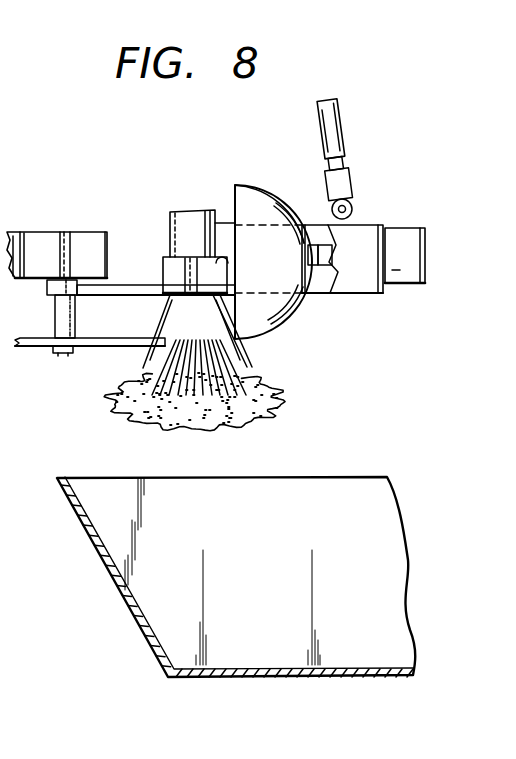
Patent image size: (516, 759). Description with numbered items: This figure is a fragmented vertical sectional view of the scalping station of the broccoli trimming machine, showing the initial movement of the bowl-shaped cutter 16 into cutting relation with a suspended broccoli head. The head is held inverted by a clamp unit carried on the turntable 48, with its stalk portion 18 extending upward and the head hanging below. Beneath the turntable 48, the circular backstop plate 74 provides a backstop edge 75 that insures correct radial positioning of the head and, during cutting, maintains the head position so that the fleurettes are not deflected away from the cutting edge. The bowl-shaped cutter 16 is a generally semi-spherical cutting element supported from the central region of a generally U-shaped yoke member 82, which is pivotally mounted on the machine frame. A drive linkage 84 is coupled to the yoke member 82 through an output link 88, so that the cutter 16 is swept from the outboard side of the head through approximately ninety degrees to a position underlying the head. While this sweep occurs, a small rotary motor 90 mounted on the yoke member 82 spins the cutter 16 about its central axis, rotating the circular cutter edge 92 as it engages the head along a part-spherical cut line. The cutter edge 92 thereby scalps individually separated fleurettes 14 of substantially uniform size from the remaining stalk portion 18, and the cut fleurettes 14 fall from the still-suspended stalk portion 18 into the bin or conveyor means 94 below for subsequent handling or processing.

The fleurettes 14 is at (207, 380).
The bowl-shaped cutter 16 is at (290, 306).
The stalk portion 18 is at (168, 218).
The turntable 48 is at (60, 233).
The backstop plate 74 is at (100, 347).
The backstop edge 75 is at (155, 342).
The yoke member 82 is at (372, 233).
The drive linkage 84 is at (362, 205).
The output link 88 is at (330, 140).
The rotary motor 90 is at (415, 233).
The cutter edge 92 is at (233, 187).
The bin or conveyor means 94 is at (353, 500).